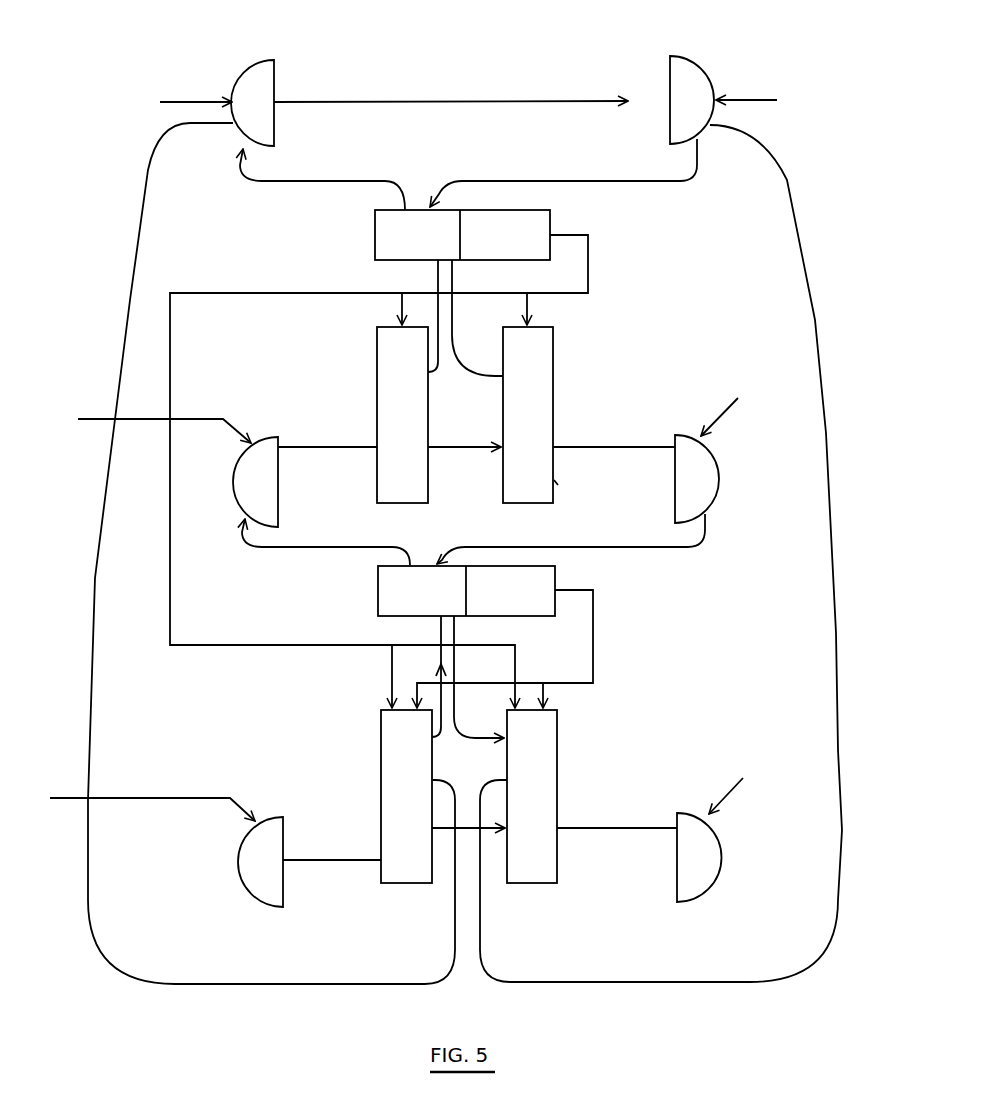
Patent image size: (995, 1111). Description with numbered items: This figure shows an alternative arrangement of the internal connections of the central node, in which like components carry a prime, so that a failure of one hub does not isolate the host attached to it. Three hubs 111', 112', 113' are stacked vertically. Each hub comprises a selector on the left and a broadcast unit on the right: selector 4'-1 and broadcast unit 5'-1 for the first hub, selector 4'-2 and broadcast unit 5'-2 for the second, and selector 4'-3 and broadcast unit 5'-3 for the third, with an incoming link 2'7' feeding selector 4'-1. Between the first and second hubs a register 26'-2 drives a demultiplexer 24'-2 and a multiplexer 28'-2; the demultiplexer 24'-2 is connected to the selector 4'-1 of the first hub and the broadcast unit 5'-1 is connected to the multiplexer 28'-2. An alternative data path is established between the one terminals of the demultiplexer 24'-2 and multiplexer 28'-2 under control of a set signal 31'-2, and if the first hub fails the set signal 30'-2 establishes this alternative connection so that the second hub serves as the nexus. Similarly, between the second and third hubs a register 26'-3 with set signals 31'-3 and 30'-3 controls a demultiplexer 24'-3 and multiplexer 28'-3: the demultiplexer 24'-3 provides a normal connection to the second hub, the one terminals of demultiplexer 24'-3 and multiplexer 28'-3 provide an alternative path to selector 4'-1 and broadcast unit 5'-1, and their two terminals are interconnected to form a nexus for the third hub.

The selector 4'-1 is at (252, 103).
The broadcast unit 5'-1 is at (692, 100).
The selector 4'-2 is at (255, 482).
The broadcast unit 5'-2 is at (697, 479).
The selector 4'-3 is at (260, 862).
The broadcast unit 5'-3 is at (699, 857).
The hub 111' is at (783, 63).
The hub 112' is at (787, 418).
The hub 113' is at (797, 745).
The register 26'-2 is at (411, 235).
The set signal 31'-2 is at (549, 225).
The set signal 30'-2 is at (425, 471).
The demultiplexer 24'-2 is at (421, 430).
The multiplexer 28'-2 is at (547, 430).
The register 26'-3 is at (412, 591).
The set signal 31'-3 is at (572, 588).
The set signal 30'-3 is at (563, 649).
The demultiplexer 24'-3 is at (378, 829).
The multiplexer 28'-3 is at (571, 826).
The link 2'7' is at (190, 87).